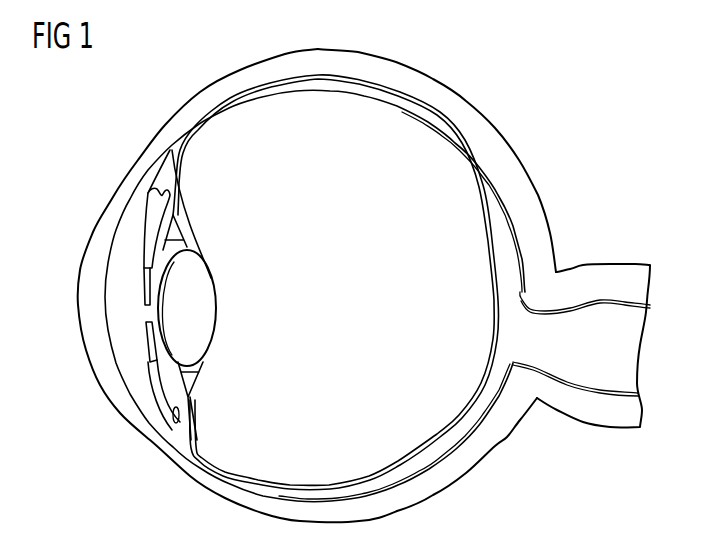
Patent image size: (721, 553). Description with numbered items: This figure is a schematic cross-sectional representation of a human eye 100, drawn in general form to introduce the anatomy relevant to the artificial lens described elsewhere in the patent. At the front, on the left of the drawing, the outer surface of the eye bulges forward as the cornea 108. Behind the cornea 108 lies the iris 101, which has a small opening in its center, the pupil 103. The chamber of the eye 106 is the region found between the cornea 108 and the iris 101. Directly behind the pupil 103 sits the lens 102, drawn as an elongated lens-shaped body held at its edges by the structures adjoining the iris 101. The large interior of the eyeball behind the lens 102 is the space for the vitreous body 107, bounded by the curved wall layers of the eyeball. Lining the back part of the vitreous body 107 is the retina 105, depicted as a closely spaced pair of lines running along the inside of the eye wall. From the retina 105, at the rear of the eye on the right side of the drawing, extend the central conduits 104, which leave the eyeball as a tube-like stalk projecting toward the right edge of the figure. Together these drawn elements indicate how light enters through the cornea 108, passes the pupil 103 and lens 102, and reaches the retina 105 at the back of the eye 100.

The eye 100 is at (130, 432).
The iris 101 is at (142, 271).
The lens 102 is at (203, 313).
The pupil 103 is at (138, 312).
The central conduits 104 is at (628, 361).
The retina 105 is at (502, 233).
The chamber of the eye 106 is at (118, 350).
The vitreous body 107 is at (222, 135).
The cornea 108 is at (117, 395).